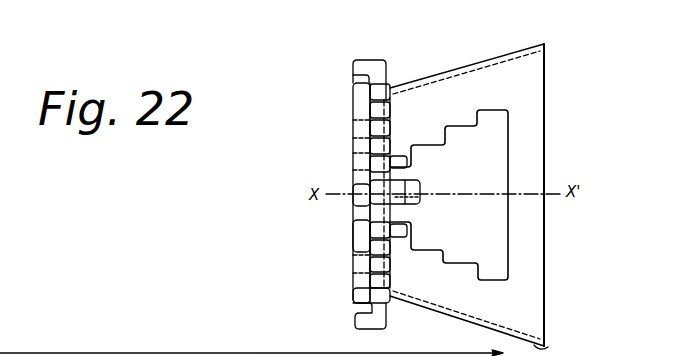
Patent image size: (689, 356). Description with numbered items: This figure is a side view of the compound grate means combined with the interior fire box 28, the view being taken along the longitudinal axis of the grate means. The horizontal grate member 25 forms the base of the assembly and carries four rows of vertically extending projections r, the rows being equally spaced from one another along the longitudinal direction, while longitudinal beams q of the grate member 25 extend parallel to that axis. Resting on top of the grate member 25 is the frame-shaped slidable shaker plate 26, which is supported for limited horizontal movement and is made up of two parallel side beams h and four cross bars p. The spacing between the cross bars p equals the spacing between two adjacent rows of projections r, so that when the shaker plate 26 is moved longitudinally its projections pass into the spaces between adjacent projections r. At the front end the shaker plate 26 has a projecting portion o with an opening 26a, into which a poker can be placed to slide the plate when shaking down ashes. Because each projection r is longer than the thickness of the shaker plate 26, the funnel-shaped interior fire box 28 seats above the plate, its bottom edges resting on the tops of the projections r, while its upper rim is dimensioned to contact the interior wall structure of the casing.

The horizontal grate member 25 is at (355, 280).
The slidable shaker plate 26 is at (386, 322).
The opening 26a is at (421, 197).
The interior fire box 28 is at (548, 347).
The side beams h is at (360, 60).
The cross bars p is at (388, 78).
The longitudinal beams q is at (360, 230).
The projecting portion o is at (420, 180).
The vertically extending projections r is at (392, 128).